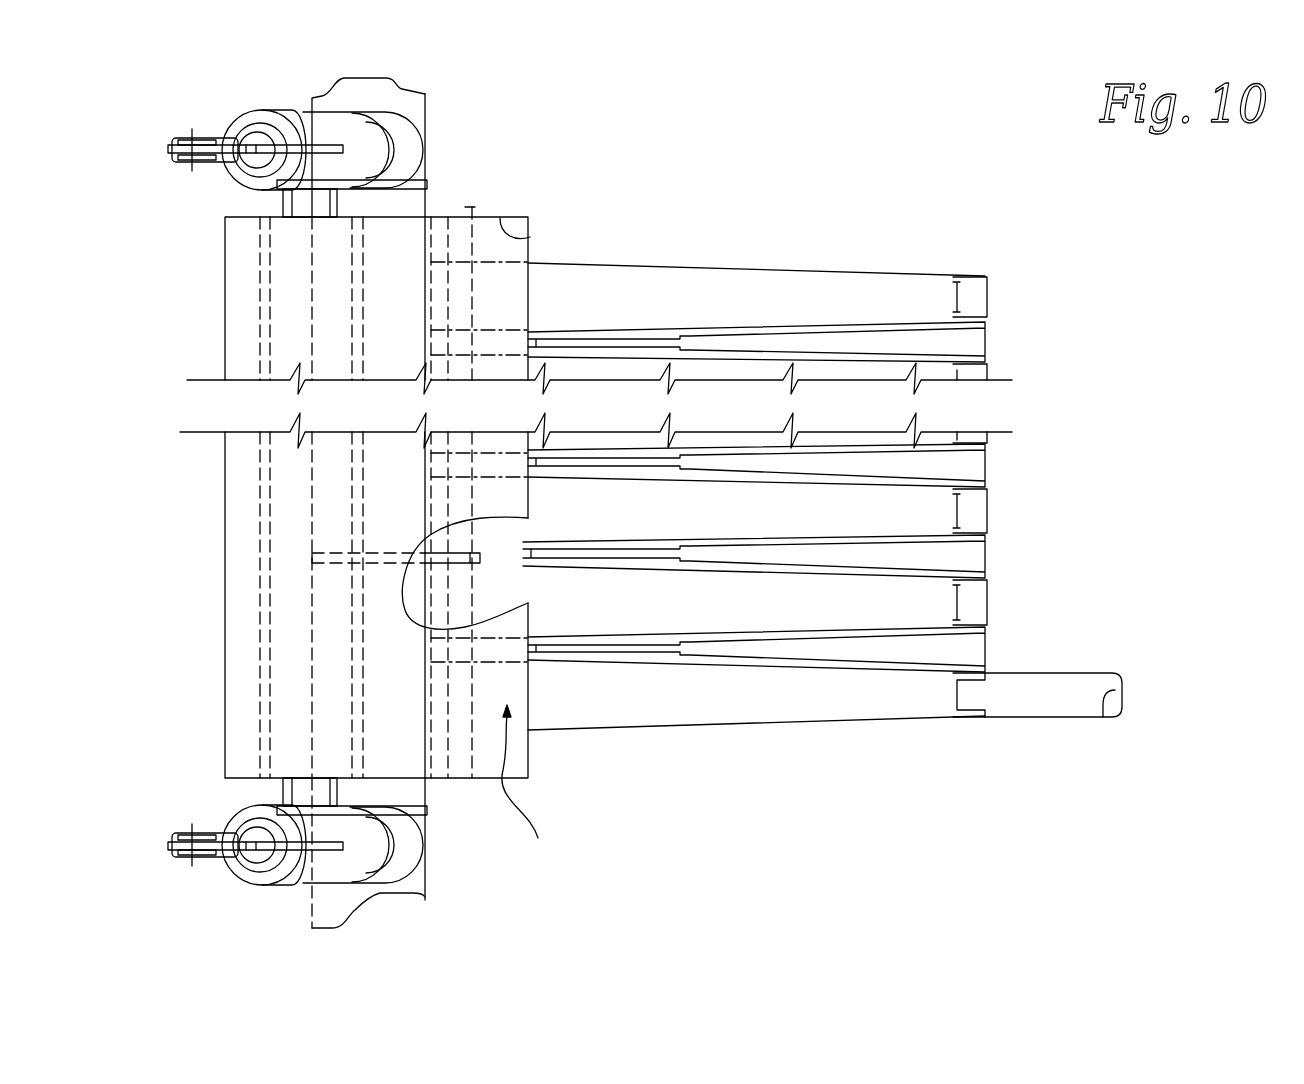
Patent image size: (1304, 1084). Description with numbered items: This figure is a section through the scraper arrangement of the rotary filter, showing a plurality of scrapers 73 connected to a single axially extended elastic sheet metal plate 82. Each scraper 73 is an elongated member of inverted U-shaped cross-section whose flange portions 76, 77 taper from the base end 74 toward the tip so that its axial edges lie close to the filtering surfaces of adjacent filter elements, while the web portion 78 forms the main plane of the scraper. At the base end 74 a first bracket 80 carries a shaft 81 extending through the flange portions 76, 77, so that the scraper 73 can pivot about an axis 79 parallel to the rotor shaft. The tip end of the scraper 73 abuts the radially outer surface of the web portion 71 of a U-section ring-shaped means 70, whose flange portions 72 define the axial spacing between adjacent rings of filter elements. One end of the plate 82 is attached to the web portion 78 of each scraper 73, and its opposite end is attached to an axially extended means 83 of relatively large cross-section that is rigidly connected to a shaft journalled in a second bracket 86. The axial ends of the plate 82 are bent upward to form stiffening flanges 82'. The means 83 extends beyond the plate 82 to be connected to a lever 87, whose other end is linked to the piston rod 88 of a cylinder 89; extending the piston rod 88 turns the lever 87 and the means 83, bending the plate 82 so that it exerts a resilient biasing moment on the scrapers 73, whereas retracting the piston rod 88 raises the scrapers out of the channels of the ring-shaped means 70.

The ring-shaped means 70 is at (1132, 686).
The web portion 71 is at (1110, 692).
The flange portions 72 is at (1030, 683).
The scraper 73 is at (822, 255).
The base end 74 is at (534, 790).
The flange portion 76 is at (723, 723).
The flange portion 77 is at (733, 662).
The web portion 78 is at (638, 698).
The axis 79 is at (472, 205).
The first bracket 80 is at (405, 556).
The shaft 81 is at (410, 558).
The elastic sheet metal plate 82 is at (398, 497).
The stiffening flanges 82' is at (559, 208).
The means rigidly connected to shaft 83 is at (425, 882).
The second bracket 86 is at (417, 790).
The lever 87 is at (260, 870).
The piston rod 88 is at (238, 838).
The cylinder 89 is at (293, 877).